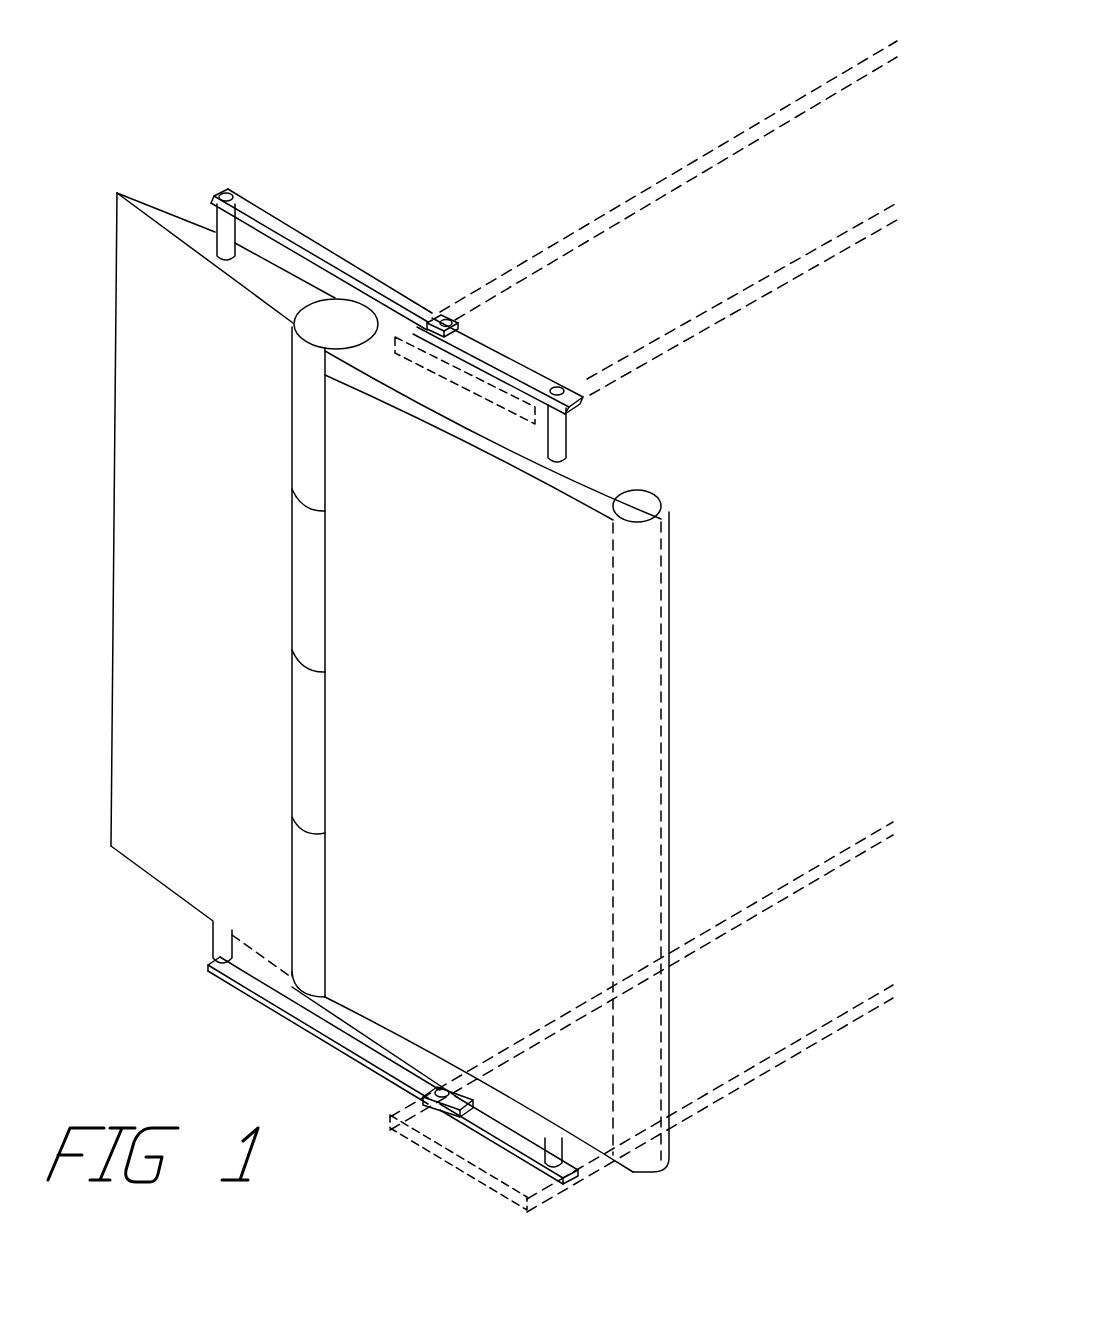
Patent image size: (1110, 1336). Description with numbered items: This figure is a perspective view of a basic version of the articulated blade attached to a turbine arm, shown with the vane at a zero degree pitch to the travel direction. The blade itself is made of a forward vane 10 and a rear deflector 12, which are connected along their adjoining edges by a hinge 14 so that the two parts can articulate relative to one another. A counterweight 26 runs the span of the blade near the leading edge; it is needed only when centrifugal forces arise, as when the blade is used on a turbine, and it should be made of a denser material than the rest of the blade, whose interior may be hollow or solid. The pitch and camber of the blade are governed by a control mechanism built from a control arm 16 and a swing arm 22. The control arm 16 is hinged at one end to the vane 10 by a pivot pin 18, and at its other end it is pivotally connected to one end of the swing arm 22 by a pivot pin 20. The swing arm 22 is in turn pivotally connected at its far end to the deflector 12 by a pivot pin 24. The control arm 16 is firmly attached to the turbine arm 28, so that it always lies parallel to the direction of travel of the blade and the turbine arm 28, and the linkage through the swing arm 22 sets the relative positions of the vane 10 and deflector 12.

The vane 10 is at (513, 702).
The deflector 12 is at (222, 550).
The hinge 14 is at (301, 378).
The control arm 16 is at (513, 362).
The pivot pin 18 is at (560, 432).
The pivot pin 20 is at (460, 321).
The swing arm 22 is at (348, 272).
The pivot pin 24 is at (227, 232).
The counterweight 26 is at (640, 508).
The turbine arm 28 is at (551, 290).